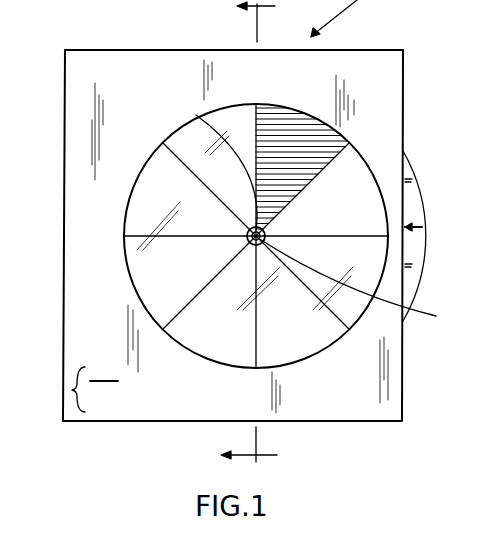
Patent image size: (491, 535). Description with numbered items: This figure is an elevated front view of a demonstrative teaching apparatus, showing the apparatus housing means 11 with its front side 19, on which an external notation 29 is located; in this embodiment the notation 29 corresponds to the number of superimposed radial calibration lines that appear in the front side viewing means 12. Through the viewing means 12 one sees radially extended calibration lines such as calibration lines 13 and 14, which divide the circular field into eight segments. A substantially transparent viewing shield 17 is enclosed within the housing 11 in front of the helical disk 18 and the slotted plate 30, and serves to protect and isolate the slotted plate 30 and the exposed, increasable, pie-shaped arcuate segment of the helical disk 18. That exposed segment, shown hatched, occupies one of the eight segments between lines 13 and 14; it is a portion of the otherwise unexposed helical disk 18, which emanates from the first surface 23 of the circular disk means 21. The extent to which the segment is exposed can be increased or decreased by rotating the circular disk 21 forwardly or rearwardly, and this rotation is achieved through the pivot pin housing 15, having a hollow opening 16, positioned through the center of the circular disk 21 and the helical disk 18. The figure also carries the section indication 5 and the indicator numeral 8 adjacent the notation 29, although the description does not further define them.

The section line 5- 5 is at (256, 232).
The indicator numeral 8 is at (104, 398).
The apparatus housing means 11 is at (128, 44).
The front side viewing means 12 is at (367, 157).
The calibration line 13 is at (143, 237).
The calibration line 14 is at (183, 317).
The pivot pin housing 15 is at (199, 116).
The hollow opening 16 is at (357, 283).
The transparent viewing shield 17 is at (300, 340).
The helical disk 18 is at (300, 133).
The front side 19 is at (74, 79).
The circular disk means 21 is at (424, 186).
The first surface 23 is at (412, 243).
The external notation 29 is at (65, 391).
The slotted plate 30 is at (233, 118).